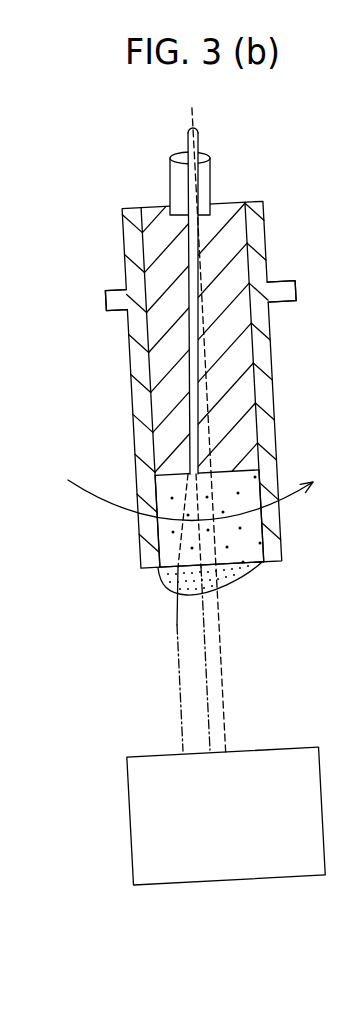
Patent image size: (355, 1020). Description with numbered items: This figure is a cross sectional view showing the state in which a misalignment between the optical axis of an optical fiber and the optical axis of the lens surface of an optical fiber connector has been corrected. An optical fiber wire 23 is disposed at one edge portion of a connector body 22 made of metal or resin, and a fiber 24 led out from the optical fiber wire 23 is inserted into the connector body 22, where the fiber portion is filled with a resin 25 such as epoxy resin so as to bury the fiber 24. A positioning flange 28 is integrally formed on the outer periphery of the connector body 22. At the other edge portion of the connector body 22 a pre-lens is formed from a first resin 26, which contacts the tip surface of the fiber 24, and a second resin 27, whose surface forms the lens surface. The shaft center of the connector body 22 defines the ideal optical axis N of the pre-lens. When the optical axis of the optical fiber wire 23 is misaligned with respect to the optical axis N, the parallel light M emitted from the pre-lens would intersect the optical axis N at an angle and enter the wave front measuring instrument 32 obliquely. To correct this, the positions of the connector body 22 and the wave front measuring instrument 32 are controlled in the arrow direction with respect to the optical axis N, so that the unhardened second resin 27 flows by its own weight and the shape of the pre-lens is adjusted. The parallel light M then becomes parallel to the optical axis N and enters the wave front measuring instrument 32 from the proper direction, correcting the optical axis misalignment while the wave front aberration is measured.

The connector body 22 is at (262, 357).
The optical fiber wire 23 is at (180, 183).
The fiber 24 is at (190, 417).
The resin 25 is at (236, 244).
The first resin 26 is at (254, 524).
The second resin 27 is at (224, 574).
The positioning flange 28 is at (119, 317).
The wave front measuring instrument 32 is at (145, 814).
The parallel light M is at (173, 684).
The optical axis N is at (235, 686).